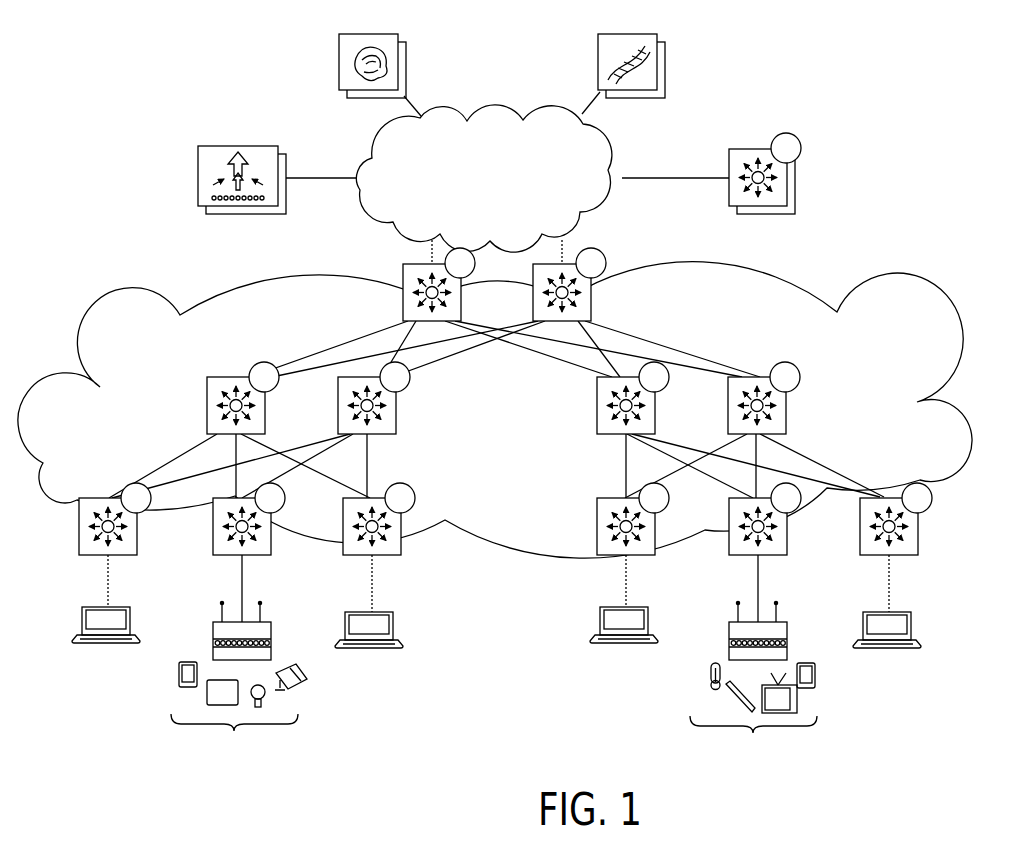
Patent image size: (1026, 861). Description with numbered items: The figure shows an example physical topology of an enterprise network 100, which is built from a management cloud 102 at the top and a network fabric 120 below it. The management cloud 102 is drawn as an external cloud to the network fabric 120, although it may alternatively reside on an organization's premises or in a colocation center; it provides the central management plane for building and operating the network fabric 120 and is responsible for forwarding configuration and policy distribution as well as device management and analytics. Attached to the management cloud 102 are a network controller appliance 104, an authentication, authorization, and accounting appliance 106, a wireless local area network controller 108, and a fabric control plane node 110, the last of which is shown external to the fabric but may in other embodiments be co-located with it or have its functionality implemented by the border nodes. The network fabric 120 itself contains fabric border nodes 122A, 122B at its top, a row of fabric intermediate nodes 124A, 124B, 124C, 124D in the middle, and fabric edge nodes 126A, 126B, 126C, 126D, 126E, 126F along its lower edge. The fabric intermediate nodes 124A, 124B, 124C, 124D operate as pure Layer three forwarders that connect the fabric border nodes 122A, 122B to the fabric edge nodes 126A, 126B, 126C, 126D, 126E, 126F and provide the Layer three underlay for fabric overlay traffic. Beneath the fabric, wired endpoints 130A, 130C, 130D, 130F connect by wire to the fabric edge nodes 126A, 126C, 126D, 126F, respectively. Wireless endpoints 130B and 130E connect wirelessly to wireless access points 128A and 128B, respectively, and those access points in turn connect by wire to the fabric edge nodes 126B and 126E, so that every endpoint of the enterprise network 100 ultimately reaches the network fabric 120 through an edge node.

The enterprise network 100 is at (948, 132).
The management cloud 102 is at (375, 155).
The network controller appliance 104 is at (598, 62).
The authentication, authorization, and accounting (AAA) appliance 106 is at (339, 62).
The wireless local area network controller (WLC) 108 is at (198, 178).
The fabric control plane node 110 is at (729, 163).
The network fabric 120 is at (510, 425).
The fabric border node 122A is at (403, 270).
The fabric border node 122B is at (606, 263).
The fabric intermediate node 124A is at (207, 405).
The fabric intermediate node 124B is at (396, 430).
The fabric intermediate node 124C is at (597, 432).
The fabric intermediate node 124D is at (786, 406).
The fabric edge node 126A is at (80, 555).
The fabric edge node 126B is at (225, 555).
The fabric edge node 126C is at (401, 548).
The fabric edge node 126D is at (655, 548).
The fabric edge node 126E is at (787, 555).
The fabric edge node 126F is at (918, 555).
The wireless access point 128A is at (272, 614).
The wireless access point 128B is at (729, 640).
The wired endpoint 130A is at (95, 645).
The wireless endpoints 130B is at (239, 713).
The wired endpoint 130C is at (360, 650).
The wired endpoint 130D is at (613, 645).
The wireless endpoints 130E is at (753, 714).
The wired endpoint 130F is at (893, 650).